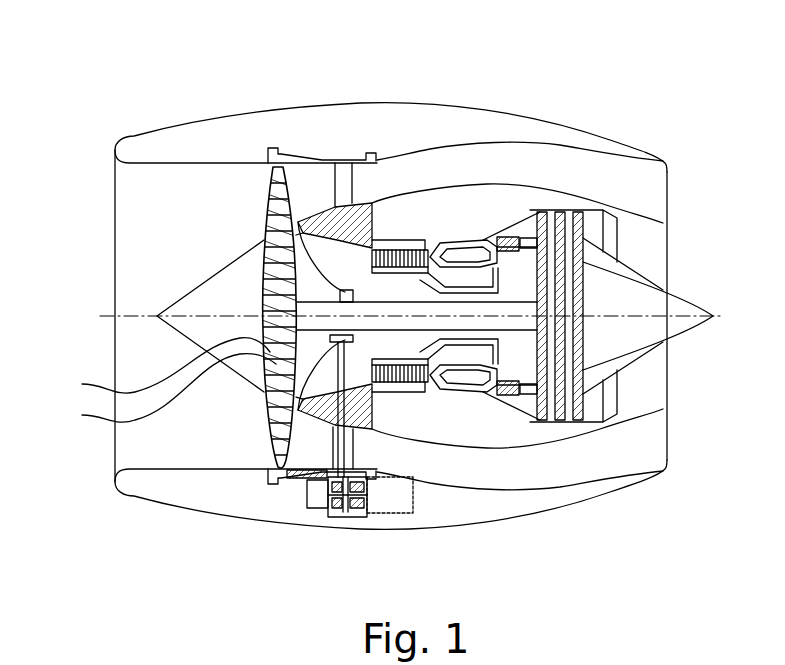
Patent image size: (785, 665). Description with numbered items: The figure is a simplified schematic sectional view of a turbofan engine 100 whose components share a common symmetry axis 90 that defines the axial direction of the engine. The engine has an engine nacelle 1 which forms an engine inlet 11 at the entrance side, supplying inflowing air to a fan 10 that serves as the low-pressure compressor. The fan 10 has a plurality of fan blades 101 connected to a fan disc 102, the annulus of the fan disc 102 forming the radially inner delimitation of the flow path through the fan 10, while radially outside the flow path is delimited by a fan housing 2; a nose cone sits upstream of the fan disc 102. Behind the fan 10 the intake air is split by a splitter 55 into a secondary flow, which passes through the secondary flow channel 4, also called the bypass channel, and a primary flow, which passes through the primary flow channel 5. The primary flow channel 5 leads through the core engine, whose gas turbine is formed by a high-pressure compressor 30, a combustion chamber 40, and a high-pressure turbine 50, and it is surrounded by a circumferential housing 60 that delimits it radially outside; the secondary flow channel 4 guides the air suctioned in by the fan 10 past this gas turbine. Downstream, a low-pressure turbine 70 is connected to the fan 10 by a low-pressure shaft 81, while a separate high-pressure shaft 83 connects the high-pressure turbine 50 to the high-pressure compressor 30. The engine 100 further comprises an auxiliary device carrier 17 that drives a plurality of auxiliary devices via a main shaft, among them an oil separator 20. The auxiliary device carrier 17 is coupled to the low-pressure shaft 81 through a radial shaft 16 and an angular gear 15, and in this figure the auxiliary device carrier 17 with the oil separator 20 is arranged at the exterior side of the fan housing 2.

The engine nacelle 1 is at (158, 120).
The fan housing 2 is at (320, 190).
The secondary flow channel 4 is at (349, 170).
The primary flow channel 5 is at (332, 222).
The fan 10 is at (262, 225).
The engine inlet 11 is at (157, 163).
The angular gear 15 is at (347, 291).
The radial shaft 16 is at (340, 370).
The auxiliary device carrier 17 is at (333, 510).
The oil separator 20 is at (393, 505).
The high-pressure compressor 30 is at (409, 247).
The combustion chamber 40 is at (512, 237).
The high-pressure turbine 50 is at (562, 207).
The splitter 55 is at (298, 225).
The circumferential housing 60 is at (298, 455).
The low-pressure turbine 70 is at (520, 184).
The low-pressure shaft 81 is at (428, 334).
The high-pressure shaft 83 is at (483, 350).
The symmetry axis 90 is at (722, 312).
The turbofan engine 100 is at (421, 104).
The fan blades 101 is at (158, 394).
The fan disc 102 is at (155, 369).